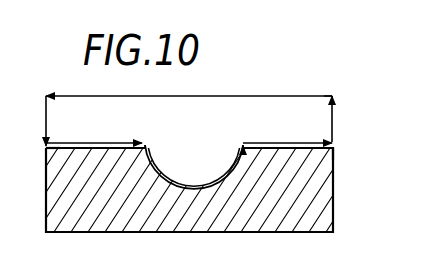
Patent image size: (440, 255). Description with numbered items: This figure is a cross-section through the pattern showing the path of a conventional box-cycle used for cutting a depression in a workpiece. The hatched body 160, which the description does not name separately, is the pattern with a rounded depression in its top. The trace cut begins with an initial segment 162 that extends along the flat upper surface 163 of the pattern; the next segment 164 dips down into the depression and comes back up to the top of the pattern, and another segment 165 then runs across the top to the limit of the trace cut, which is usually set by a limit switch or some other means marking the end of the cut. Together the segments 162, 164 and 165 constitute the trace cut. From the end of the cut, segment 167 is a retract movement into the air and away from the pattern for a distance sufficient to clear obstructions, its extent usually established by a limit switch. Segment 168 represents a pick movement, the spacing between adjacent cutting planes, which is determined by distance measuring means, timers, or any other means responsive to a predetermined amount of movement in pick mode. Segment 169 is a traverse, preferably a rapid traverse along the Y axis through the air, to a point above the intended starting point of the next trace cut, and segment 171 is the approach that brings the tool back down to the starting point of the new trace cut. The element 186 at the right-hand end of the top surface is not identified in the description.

The substrate body 160 is at (334, 211).
The initial segment 162 is at (97, 143).
The flat upper surface 163 is at (46, 150).
The segment 164 is at (214, 185).
The segment 165 is at (293, 120).
The retract movement segment 167 is at (334, 126).
The pick movement segment 168 is at (332, 97).
The traverse segment 169 is at (283, 96).
The approach segment 171 is at (47, 115).
The edge of coating layer 186 is at (333, 150).